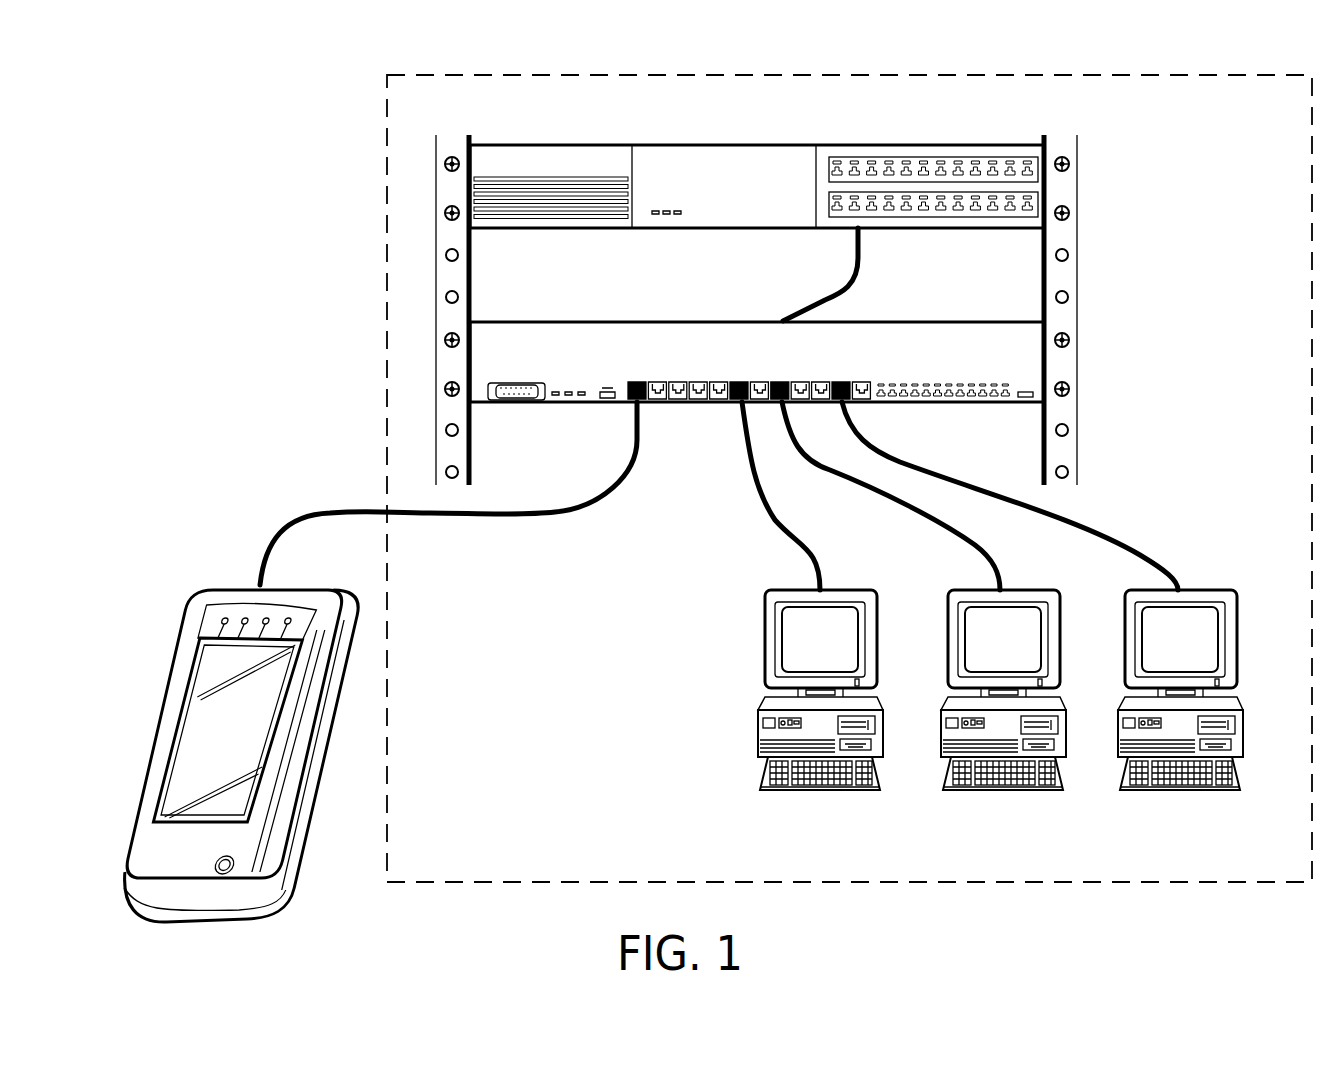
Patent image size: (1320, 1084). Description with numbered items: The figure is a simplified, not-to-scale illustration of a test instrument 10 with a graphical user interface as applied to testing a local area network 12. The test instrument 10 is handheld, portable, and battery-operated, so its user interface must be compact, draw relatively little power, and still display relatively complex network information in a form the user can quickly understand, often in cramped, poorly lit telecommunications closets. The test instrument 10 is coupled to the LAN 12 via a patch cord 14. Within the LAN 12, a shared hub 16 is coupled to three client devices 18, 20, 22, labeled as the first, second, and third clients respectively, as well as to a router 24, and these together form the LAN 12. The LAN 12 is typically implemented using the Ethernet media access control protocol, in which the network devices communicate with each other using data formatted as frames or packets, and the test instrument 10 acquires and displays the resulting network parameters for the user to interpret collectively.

The test instrument 10 is at (217, 585).
The local area network 12 is at (605, 777).
The patch cord 14 is at (443, 512).
The shared hub 16 is at (905, 320).
The device 18 is at (845, 590).
The device 20 is at (1025, 590).
The device 22 is at (1205, 590).
The router 24 is at (922, 145).